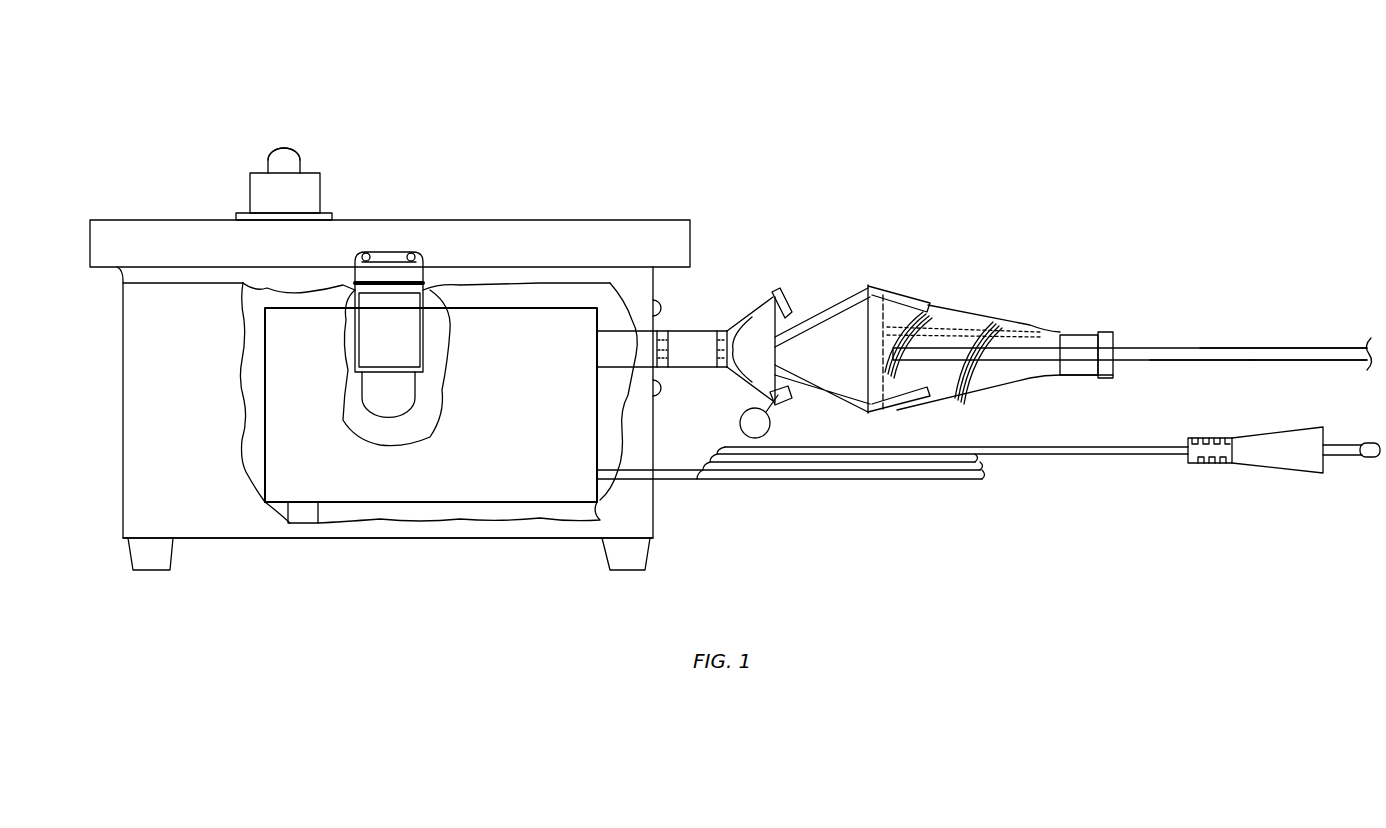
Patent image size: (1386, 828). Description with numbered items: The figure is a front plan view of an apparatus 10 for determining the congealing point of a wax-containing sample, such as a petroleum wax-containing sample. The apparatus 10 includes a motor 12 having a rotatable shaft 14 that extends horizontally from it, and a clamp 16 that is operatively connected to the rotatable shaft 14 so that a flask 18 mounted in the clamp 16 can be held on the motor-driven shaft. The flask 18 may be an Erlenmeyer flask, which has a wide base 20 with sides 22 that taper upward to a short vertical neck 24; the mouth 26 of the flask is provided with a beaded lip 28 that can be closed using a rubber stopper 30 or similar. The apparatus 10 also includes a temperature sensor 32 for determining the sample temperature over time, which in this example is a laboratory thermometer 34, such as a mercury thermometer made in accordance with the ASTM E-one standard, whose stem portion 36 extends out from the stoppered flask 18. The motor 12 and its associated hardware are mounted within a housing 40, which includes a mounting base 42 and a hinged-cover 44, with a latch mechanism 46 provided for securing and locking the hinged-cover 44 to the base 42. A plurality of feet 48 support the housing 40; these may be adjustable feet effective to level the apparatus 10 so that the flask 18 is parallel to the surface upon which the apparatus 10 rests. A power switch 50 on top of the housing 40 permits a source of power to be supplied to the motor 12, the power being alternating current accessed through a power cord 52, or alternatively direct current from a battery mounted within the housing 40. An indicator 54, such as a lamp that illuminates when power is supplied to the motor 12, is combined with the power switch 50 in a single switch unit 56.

The apparatus 10 is at (684, 96).
The motor 12 is at (524, 410).
The rotatable shaft 14 is at (620, 370).
The clamp 16 is at (840, 300).
The flask 18 is at (990, 316).
The wide base 20 is at (880, 297).
The sides 22 is at (975, 400).
The short vertical neck 24 is at (1085, 335).
The mouth 26 is at (1108, 378).
The beaded lip 28 is at (1088, 380).
The rubber stopper 30 is at (1120, 340).
The temperature sensor 32 is at (1250, 348).
The laboratory thermometer 34 is at (1190, 361).
The stem portion 36 is at (1272, 361).
The housing 40 is at (658, 508).
The mounting base 42 is at (224, 540).
The hinged-cover 44 is at (692, 240).
The latch mechanism 46 is at (423, 305).
The feet 48 is at (172, 555).
The power switch 50 is at (300, 170).
The power cord 52 is at (1030, 455).
The indicator 54 is at (268, 155).
The single switch unit 56 is at (250, 200).